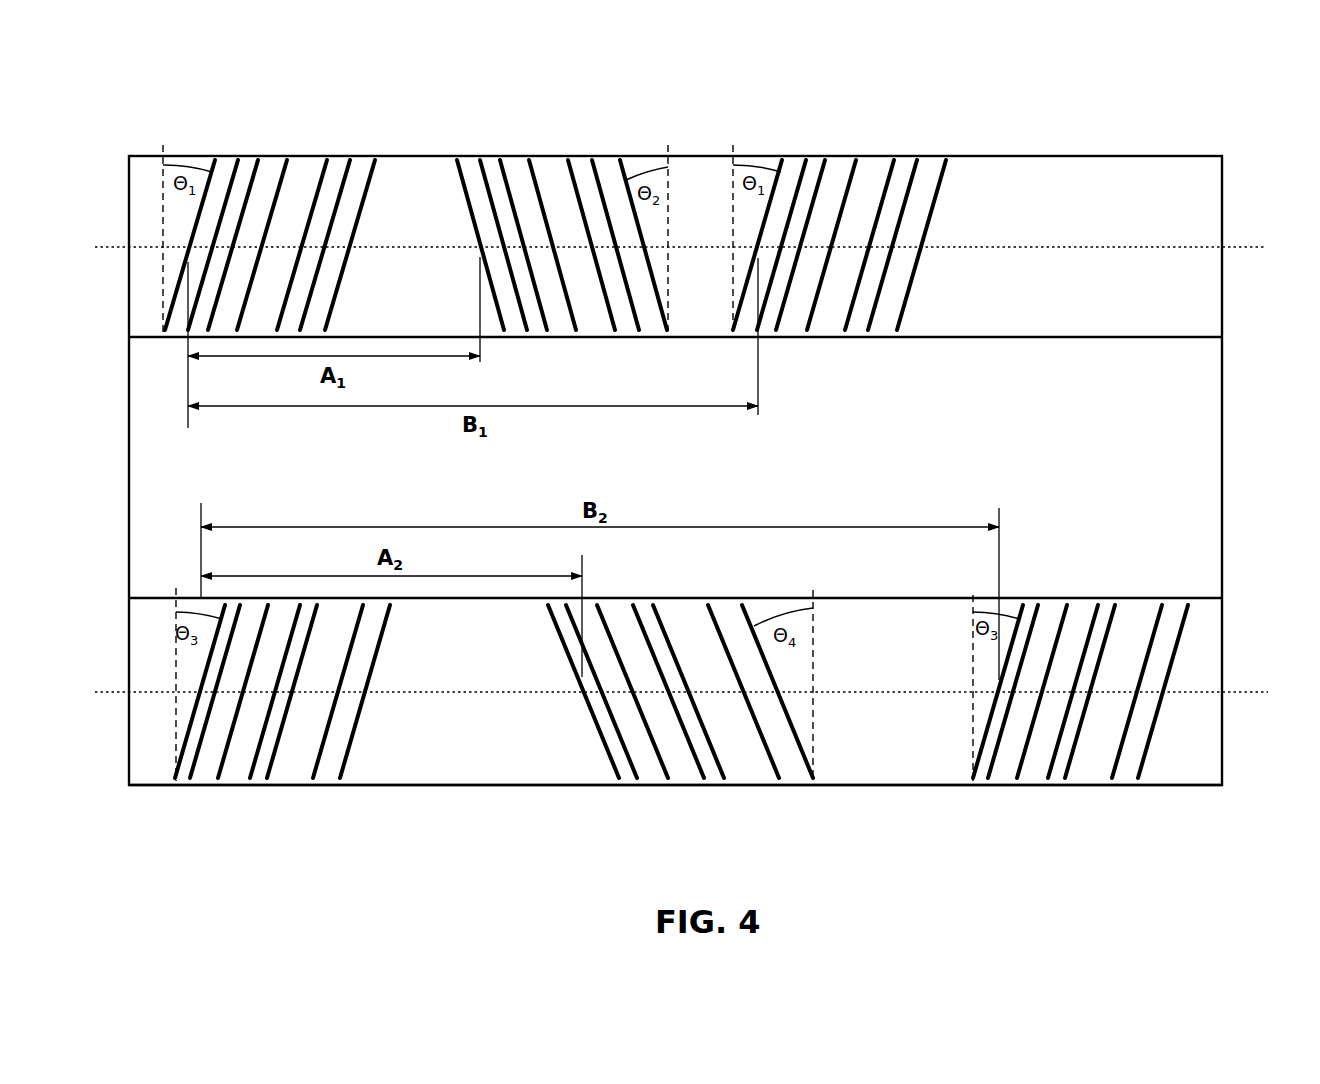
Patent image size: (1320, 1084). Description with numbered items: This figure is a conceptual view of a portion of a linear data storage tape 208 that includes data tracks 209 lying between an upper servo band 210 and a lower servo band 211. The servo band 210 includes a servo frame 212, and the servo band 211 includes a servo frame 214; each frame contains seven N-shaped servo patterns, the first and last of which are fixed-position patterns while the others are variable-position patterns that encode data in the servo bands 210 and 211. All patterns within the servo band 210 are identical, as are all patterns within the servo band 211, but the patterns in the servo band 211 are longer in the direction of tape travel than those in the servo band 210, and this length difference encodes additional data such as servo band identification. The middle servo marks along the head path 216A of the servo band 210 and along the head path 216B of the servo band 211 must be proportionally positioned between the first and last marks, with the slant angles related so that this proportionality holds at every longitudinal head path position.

The data storage tape 208 is at (118, 95).
The data tracks 209 is at (1120, 467).
The servo band 210 is at (1120, 311).
The servo band 211 is at (489, 749).
The servo frames 212 is at (957, 156).
The servo frame 214 is at (1220, 785).
The head path 216A is at (1266, 247).
The head path 216B is at (1268, 692).